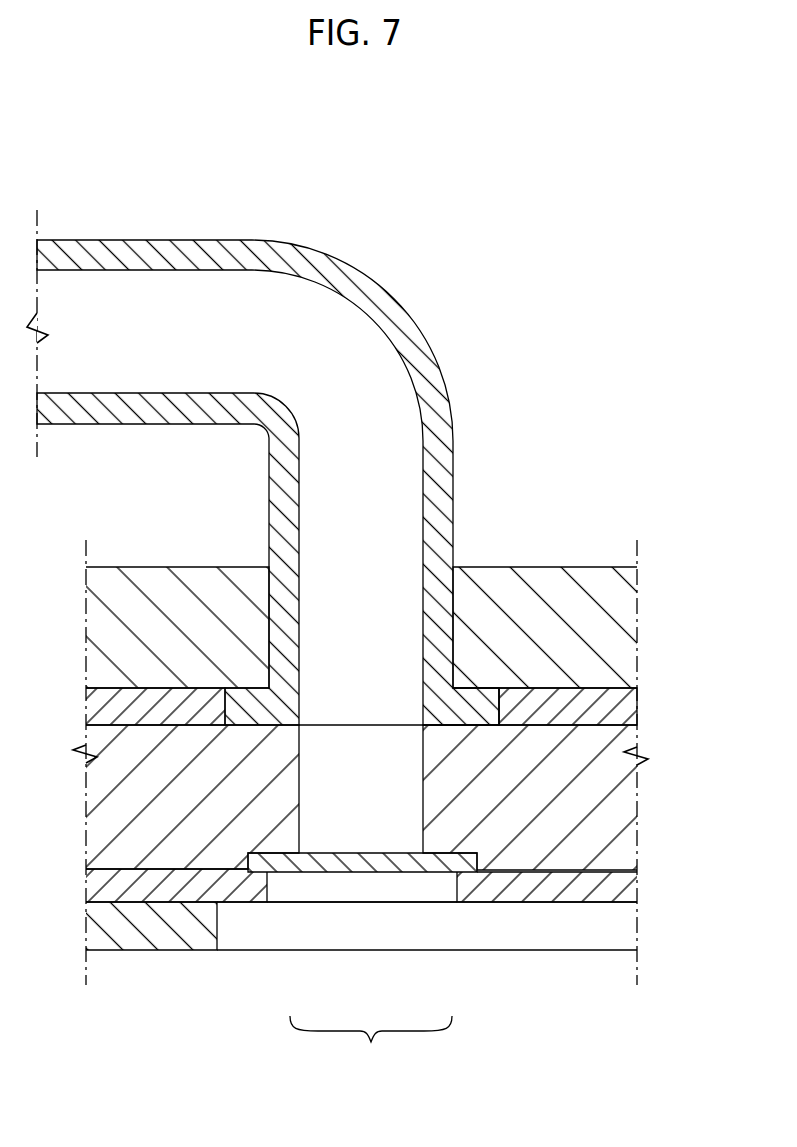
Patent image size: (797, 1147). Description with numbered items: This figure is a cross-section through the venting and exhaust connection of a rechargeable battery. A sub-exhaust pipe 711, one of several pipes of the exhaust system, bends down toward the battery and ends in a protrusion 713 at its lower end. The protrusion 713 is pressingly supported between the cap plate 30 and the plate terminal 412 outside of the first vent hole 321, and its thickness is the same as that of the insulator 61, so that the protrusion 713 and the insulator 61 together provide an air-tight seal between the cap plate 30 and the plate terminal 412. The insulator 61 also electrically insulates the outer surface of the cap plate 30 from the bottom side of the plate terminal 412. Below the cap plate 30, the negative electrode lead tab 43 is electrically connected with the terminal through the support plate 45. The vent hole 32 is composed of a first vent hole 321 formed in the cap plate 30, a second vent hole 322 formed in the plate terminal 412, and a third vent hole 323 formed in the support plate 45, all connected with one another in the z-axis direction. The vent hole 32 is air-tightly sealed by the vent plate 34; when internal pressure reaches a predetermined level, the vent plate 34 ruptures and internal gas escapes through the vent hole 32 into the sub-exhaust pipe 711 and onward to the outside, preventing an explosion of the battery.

The sub-exhaust pipe 711 is at (447, 413).
The protrusion 713 is at (481, 702).
The insulator 61 is at (543, 702).
The plate terminal 412 is at (598, 587).
The cap plate 30 is at (563, 820).
The vent plate 34 is at (427, 866).
The support plate 45 is at (250, 895).
The negative electrode lead tab 43 is at (171, 942).
The vent hole 32 is at (371, 1045).
The first vent hole 321 is at (355, 793).
The second vent hole 322 is at (334, 647).
The third vent hole 323 is at (410, 935).